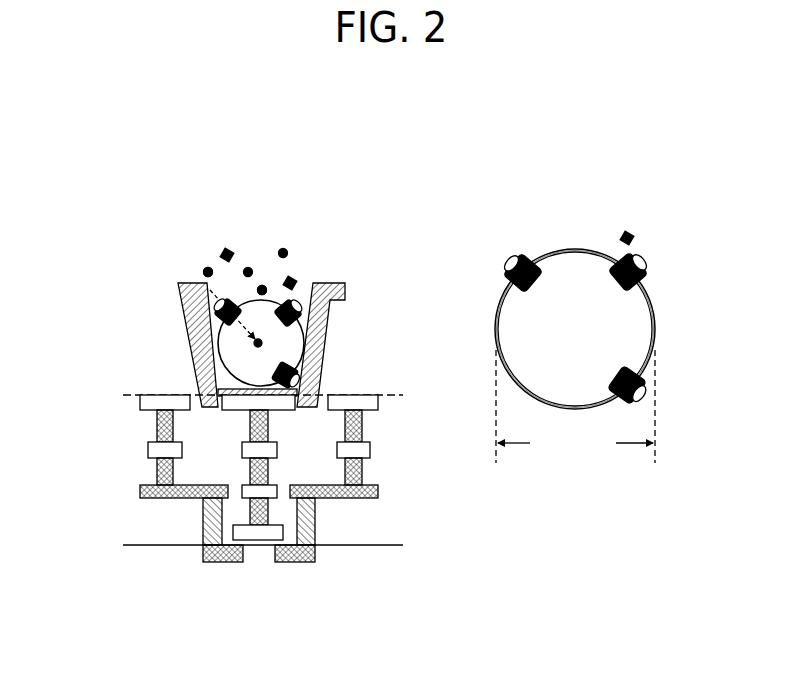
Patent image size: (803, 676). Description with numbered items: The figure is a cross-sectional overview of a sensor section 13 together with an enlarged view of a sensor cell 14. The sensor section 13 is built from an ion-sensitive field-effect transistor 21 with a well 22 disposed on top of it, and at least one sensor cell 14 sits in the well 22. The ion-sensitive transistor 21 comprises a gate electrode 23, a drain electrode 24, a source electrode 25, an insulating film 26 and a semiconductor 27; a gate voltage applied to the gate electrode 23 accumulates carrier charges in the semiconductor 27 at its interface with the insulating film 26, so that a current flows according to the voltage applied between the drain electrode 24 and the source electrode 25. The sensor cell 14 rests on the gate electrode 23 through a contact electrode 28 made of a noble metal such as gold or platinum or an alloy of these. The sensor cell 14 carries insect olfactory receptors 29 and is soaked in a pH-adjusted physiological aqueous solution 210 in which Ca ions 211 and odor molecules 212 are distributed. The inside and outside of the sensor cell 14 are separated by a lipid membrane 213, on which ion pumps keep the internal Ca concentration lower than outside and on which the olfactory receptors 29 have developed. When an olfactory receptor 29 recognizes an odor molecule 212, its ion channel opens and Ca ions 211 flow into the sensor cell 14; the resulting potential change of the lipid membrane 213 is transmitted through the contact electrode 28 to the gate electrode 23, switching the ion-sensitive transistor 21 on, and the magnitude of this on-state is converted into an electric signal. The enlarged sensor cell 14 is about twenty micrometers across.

The sensor section 13 is at (68, 255).
The sensor cell 14 is at (545, 348).
The ion-sensitive field-effect transistor (ISFET) 21 is at (115, 393).
The well 22 is at (194, 291).
The gate electrode 23 is at (268, 398).
The drain electrode 24 is at (175, 487).
The source electrode 25 is at (330, 490).
The insulating film 26 is at (393, 522).
The semiconductor 27 is at (258, 555).
The contact electrode 28 is at (224, 373).
The olfactory receptor 29 is at (222, 313).
The physiological aqueous solution 210 is at (293, 266).
The Ca ions 211 is at (284, 252).
The odor molecule 212 is at (234, 252).
The lipid membrane 213 is at (657, 332).